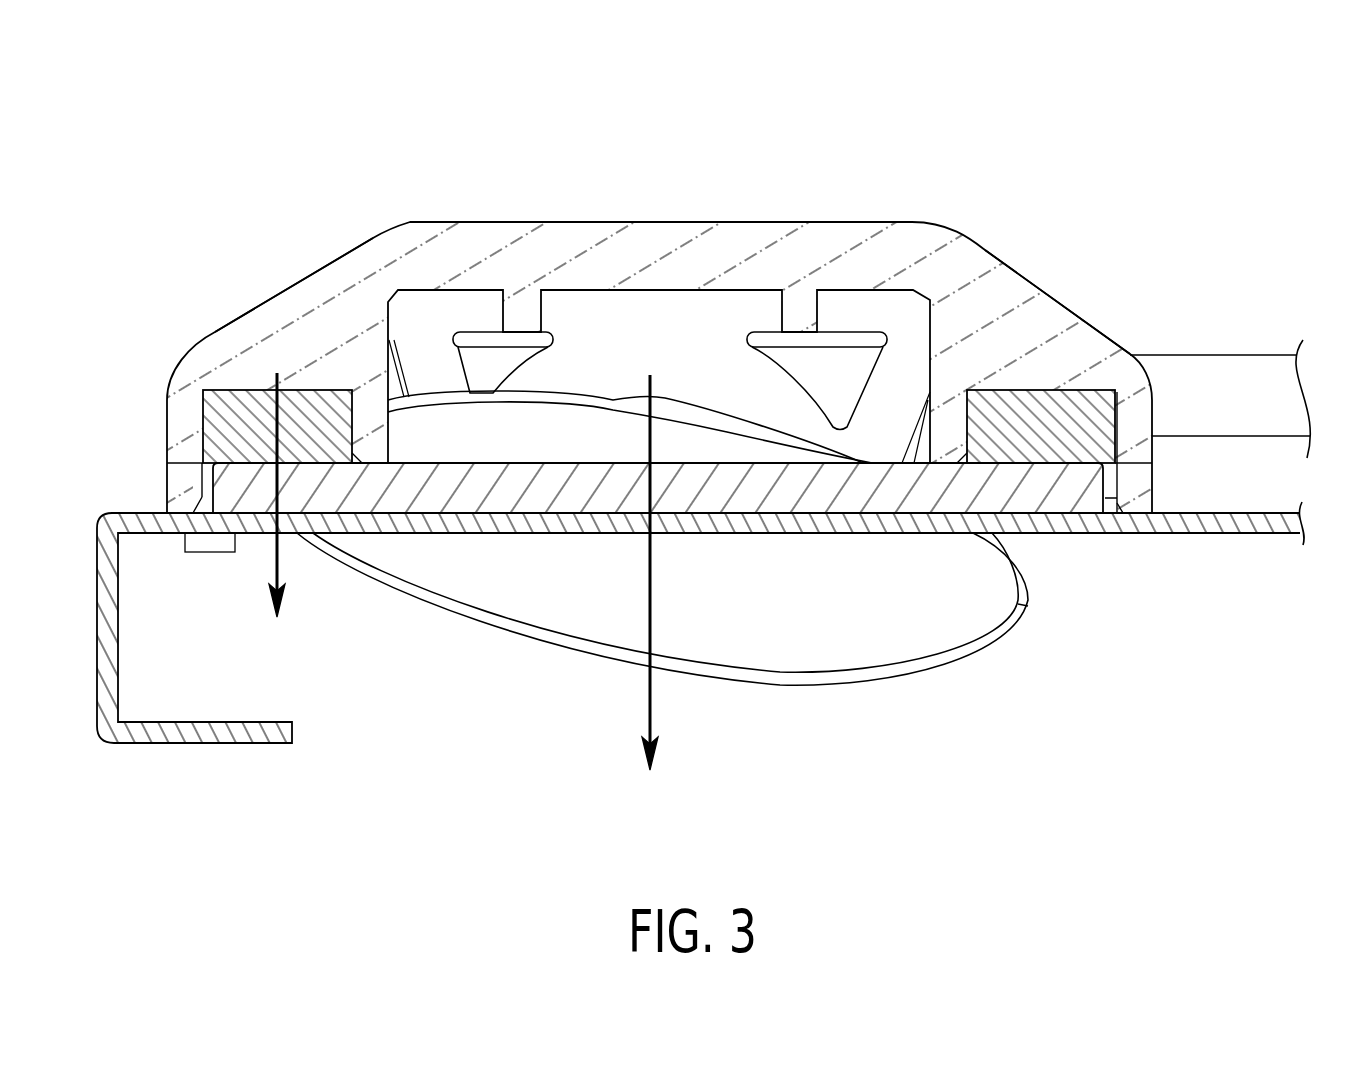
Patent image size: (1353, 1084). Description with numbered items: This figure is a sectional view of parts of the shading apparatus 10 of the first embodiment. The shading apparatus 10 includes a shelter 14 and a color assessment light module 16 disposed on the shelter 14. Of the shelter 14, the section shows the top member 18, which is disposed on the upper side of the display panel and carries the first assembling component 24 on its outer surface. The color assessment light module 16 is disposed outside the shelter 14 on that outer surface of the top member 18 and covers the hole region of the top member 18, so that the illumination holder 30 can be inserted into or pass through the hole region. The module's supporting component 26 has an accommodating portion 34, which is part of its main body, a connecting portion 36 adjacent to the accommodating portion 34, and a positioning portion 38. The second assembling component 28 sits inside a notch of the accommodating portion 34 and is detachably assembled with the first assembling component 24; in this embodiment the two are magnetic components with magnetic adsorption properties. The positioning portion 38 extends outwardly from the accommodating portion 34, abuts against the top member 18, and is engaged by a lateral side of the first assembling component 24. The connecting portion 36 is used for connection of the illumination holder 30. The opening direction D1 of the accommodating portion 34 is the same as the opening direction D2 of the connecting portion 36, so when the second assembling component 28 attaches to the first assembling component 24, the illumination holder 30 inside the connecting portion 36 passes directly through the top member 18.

The shading apparatus 10 is at (1083, 113).
The shelter 14 is at (700, 603).
The color assessment light module 16 is at (698, 452).
The top member 18 is at (1208, 523).
The first assembling component 24 is at (1083, 497).
The supporting component 26 is at (848, 258).
The second assembling component 28 is at (238, 427).
The illumination holder 30 is at (750, 647).
The accommodating portion 34 is at (282, 305).
The connecting portion 36 is at (655, 357).
The positioning portion 38 is at (197, 471).